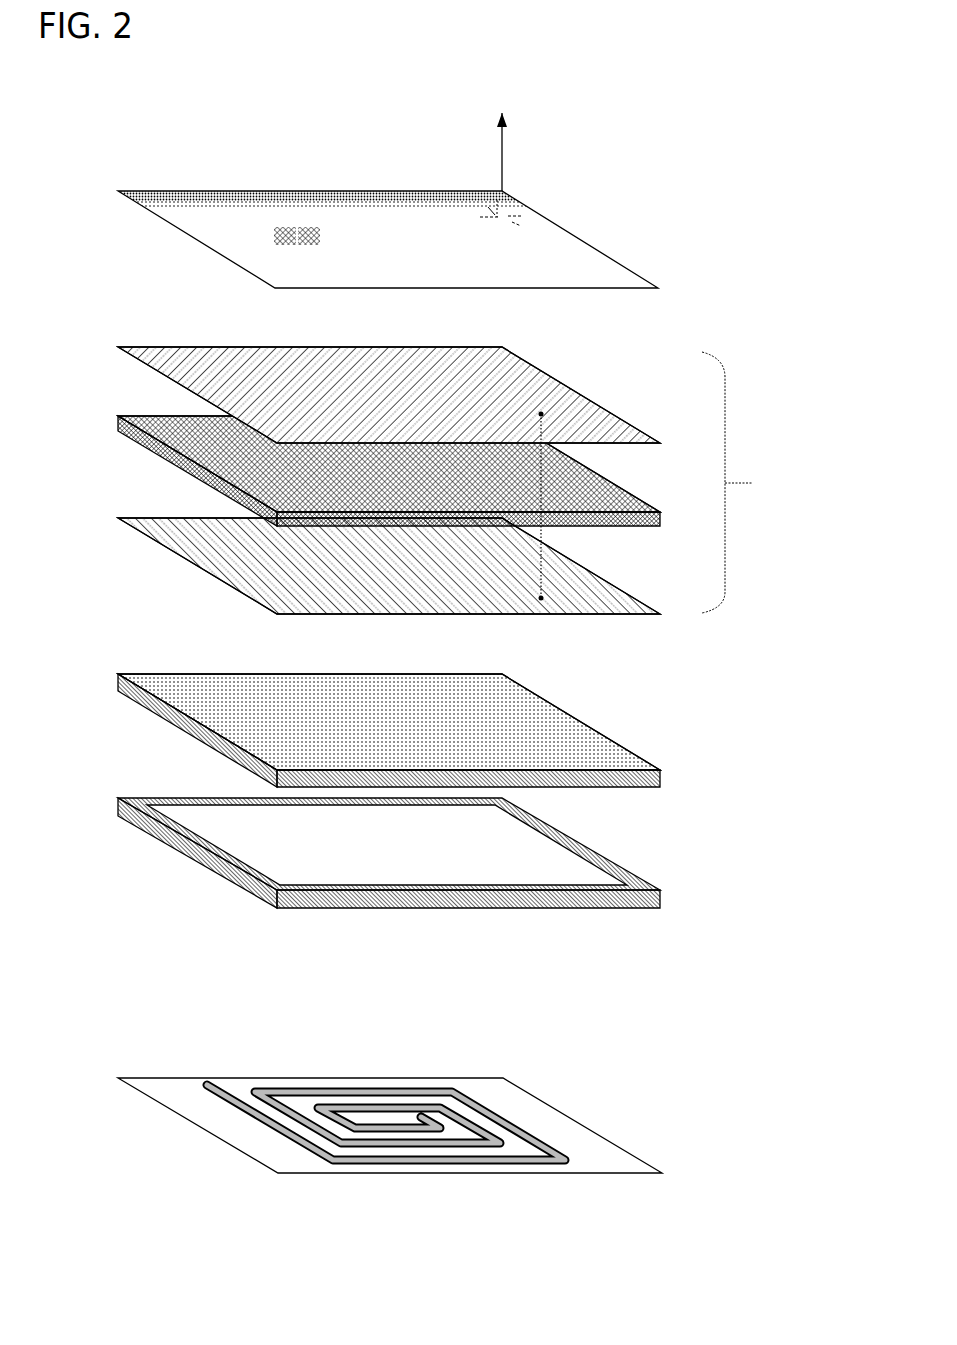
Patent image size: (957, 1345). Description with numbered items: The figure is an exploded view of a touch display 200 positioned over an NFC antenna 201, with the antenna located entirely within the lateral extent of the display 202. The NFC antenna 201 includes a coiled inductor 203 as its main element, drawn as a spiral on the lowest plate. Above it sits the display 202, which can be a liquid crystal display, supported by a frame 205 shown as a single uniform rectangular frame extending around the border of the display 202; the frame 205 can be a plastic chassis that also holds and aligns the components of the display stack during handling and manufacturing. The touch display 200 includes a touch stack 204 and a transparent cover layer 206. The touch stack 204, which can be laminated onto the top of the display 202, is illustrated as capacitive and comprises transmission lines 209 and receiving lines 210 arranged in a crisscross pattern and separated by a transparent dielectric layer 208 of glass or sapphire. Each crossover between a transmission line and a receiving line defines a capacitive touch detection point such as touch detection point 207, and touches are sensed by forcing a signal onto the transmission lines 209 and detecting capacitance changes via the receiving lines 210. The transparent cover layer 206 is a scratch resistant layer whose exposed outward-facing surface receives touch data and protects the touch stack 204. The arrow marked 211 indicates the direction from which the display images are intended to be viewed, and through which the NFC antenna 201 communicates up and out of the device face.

The touch display 200 is at (108, 87).
The NFC antenna 201 is at (123, 1049).
The display 202 is at (331, 752).
The coiled inductor 203 is at (325, 1065).
The touch stack 204 is at (677, 482).
The frame 205 is at (215, 873).
The transparent cover layer 206 is at (330, 281).
The touch detection point 207 is at (567, 380).
The transparent dielectric layer 208 is at (331, 494).
The transmission lines 209 is at (225, 335).
The receiving lines 210 is at (188, 577).
The viewing direction 211 is at (479, 169).